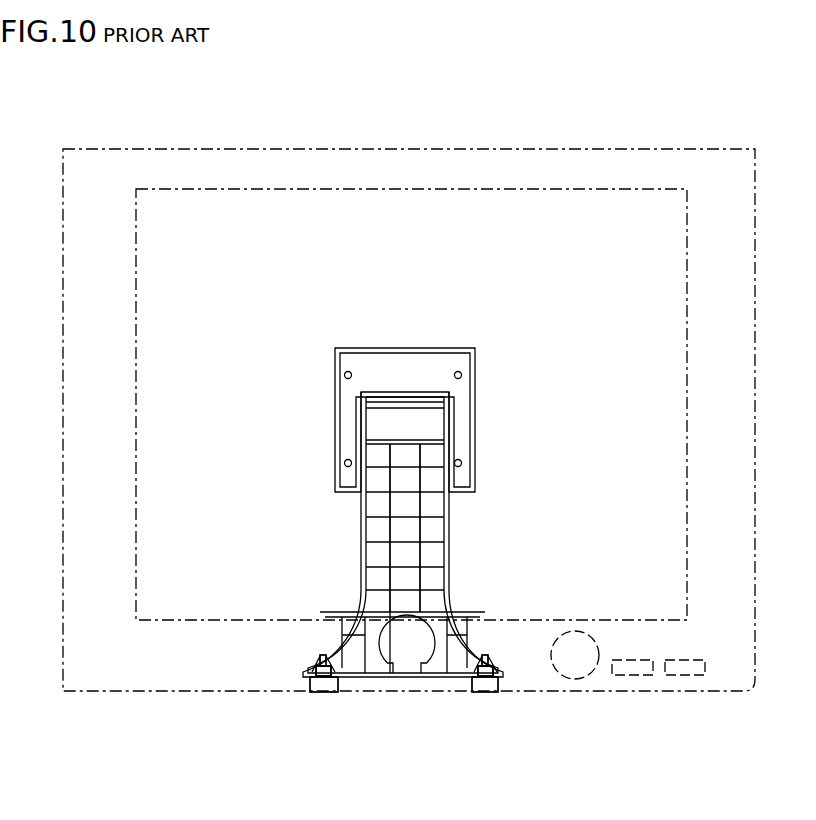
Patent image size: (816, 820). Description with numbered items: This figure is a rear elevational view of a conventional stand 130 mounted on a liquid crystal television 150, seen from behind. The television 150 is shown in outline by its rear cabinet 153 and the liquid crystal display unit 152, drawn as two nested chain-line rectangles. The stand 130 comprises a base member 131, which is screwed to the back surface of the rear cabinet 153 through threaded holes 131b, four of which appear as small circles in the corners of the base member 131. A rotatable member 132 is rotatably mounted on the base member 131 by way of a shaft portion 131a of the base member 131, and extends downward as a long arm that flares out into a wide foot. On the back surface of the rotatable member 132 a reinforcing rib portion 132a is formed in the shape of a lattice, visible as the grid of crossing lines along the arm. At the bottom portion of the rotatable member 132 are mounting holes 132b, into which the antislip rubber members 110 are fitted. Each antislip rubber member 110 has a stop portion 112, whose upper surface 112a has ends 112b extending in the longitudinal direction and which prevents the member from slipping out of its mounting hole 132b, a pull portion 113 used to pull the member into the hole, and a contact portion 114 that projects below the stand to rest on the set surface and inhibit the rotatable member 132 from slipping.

The antislip rubber member 110 is at (309, 698).
The stop portion 112 is at (247, 562).
The upper surface of the stop portion 112a is at (322, 664).
The ends of the upper surface 112b is at (337, 665).
The pull portion 113 is at (324, 656).
The contact portion 114 is at (323, 693).
The stand 130 is at (460, 332).
The base member 131 is at (477, 403).
The shaft portion 131a is at (403, 408).
The threaded holes 131b is at (343, 376).
The rotatable member 132 is at (363, 545).
The reinforcing rib portion 132a is at (425, 522).
The mounting holes 132b is at (470, 678).
The liquid crystal television 150 is at (648, 122).
The liquid crystal display unit 152 is at (330, 189).
The rear cabinet 153 is at (190, 148).